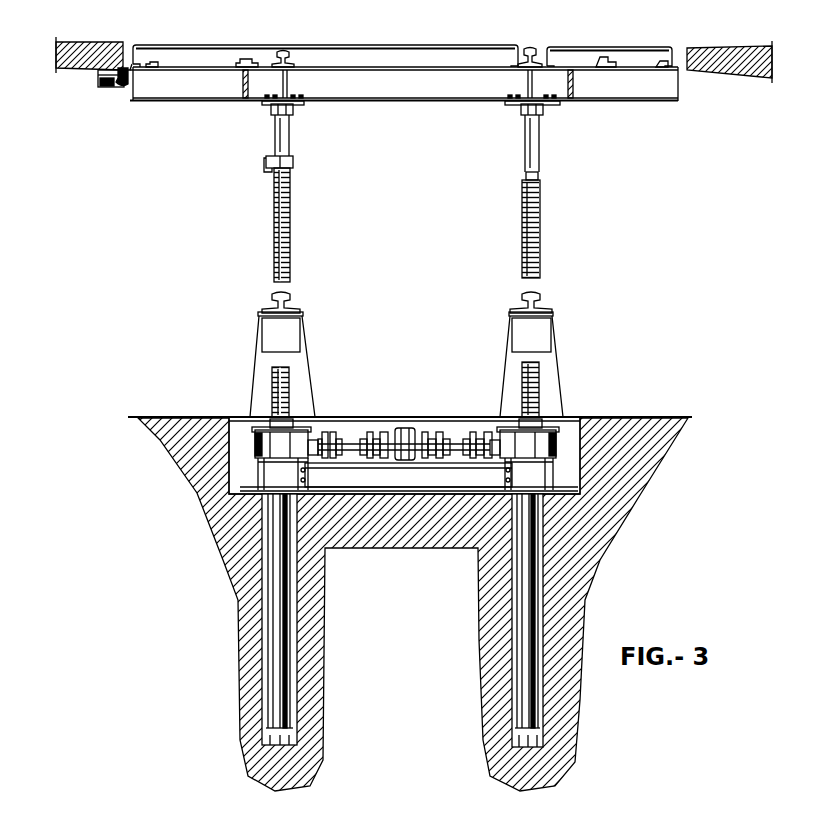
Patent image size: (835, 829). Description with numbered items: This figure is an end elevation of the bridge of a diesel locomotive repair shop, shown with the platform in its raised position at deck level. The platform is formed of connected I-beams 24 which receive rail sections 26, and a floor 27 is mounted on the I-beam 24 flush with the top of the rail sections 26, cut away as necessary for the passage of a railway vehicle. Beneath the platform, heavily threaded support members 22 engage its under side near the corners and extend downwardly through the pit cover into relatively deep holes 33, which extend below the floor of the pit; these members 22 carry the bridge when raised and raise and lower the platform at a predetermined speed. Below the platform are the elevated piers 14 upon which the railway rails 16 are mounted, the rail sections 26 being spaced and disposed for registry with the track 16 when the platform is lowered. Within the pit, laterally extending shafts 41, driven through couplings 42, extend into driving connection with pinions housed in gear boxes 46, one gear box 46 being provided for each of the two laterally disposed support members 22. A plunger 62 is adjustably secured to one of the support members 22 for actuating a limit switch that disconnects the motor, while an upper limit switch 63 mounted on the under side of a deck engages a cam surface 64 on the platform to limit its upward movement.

The elevated pier 14 is at (546, 393).
The railway rail 16 is at (542, 295).
The support member 22 is at (540, 248).
The I-beam 24 is at (410, 88).
The rail section 26 is at (533, 47).
The floor 27 is at (365, 45).
The hole 33 is at (285, 738).
The laterally extending shaft 41 is at (352, 446).
The coupling 42 is at (327, 440).
The gear box 46 is at (252, 443).
The plunger 62 is at (266, 168).
The upper limit switch 63 is at (97, 76).
The cam surface 64 is at (118, 67).